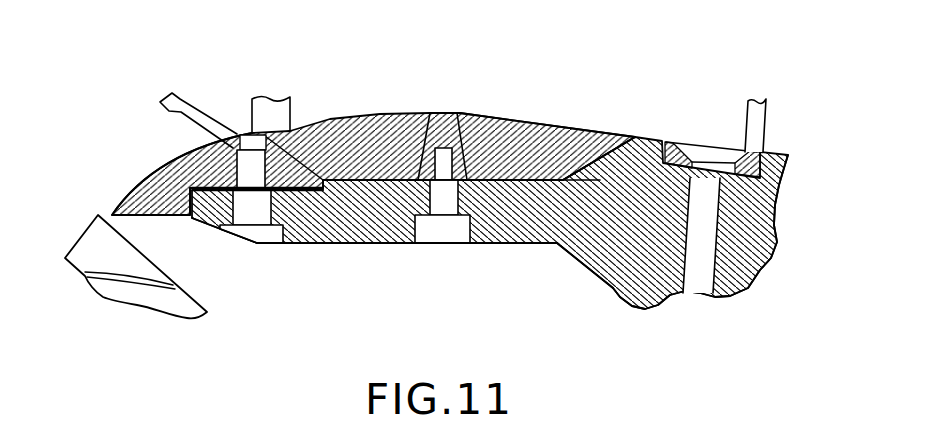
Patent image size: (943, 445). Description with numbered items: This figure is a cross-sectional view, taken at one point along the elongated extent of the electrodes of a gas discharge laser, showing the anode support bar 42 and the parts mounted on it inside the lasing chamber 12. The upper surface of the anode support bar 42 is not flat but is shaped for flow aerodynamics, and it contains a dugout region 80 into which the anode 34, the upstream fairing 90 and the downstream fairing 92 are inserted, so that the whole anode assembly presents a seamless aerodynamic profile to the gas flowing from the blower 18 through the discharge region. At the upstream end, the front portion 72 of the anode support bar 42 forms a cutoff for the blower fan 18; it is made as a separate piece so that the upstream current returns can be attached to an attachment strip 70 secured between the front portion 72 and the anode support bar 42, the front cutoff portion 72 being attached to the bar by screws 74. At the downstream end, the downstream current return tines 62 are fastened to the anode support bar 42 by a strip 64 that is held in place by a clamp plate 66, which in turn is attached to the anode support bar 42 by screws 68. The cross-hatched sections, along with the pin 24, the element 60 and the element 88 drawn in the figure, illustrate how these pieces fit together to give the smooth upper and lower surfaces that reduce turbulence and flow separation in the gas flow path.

The lasing chamber 12 is at (504, 288).
The blower 18 is at (207, 308).
The pin 24 is at (272, 105).
The anode 34 is at (445, 112).
The anode support bar 42 is at (616, 295).
The tool arrow / locking member 60 is at (181, 111).
The downstream current return tines 62 is at (764, 123).
The strip 64 is at (779, 181).
The clamp plate 66 is at (672, 138).
The screws 68 is at (715, 150).
The attachment strip 70 is at (300, 189).
The front portion 72 is at (150, 183).
The screws 74 is at (260, 250).
The dugout region 80 is at (377, 183).
The bolt 88 is at (438, 246).
The upstream fairing 90 is at (370, 128).
The downstream fairing 92 is at (522, 127).